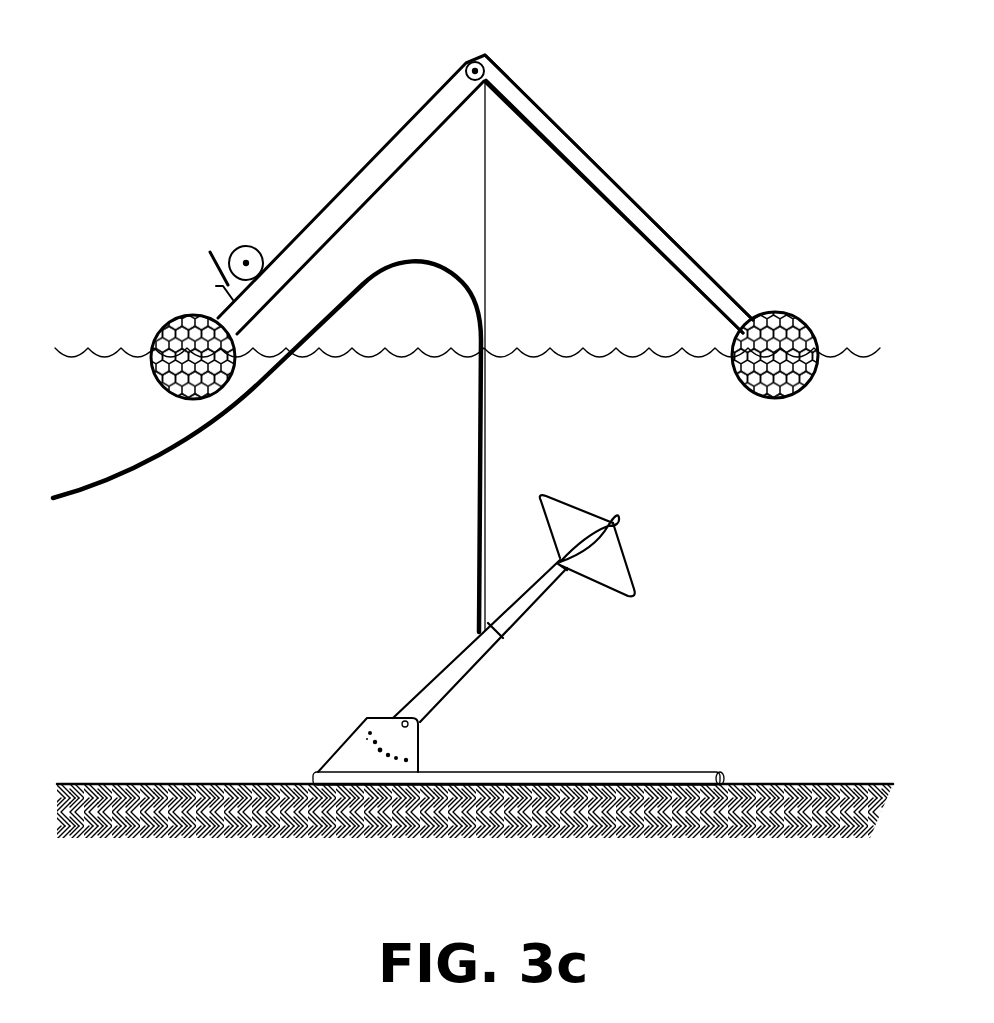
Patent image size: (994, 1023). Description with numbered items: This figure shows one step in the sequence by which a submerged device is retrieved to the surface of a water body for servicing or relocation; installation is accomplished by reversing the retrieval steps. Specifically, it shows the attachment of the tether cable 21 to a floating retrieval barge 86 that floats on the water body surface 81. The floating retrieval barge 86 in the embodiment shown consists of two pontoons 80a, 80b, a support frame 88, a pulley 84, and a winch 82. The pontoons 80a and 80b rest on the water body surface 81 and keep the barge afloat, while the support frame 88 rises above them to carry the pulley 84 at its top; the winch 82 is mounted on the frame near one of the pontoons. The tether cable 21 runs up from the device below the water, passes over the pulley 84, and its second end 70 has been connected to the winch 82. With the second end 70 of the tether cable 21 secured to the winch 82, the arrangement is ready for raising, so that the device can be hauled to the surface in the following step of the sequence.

The tether cable 21 is at (487, 497).
The second end 70 is at (368, 164).
The water body surface 81 is at (85, 348).
The winch 82 is at (232, 245).
The pulley 84 is at (468, 65).
The floating retrieval barge 86 is at (580, 93).
The support frame 88 is at (617, 186).
The pontoon 80a is at (172, 317).
The pontoon 80b is at (790, 312).